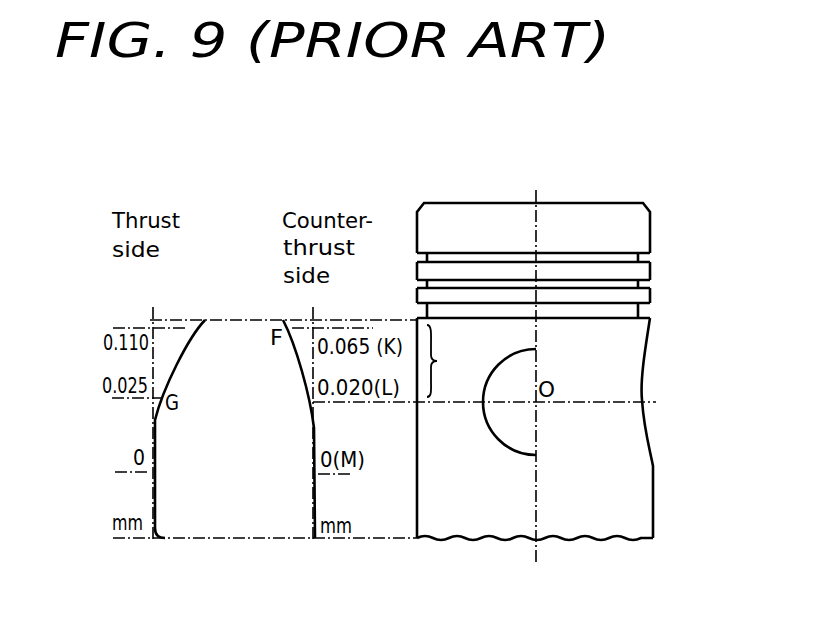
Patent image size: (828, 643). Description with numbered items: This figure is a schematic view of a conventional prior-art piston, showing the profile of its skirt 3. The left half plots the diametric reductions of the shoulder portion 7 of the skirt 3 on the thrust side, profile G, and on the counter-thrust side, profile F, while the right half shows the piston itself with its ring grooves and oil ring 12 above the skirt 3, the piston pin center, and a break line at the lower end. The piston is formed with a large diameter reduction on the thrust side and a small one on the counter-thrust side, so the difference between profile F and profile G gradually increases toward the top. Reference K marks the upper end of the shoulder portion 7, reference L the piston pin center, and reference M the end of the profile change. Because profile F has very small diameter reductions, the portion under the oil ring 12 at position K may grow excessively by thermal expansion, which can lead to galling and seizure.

The skirt 3 is at (473, 502).
The shoulder portion 7 is at (438, 361).
The oil ring 12 is at (419, 313).